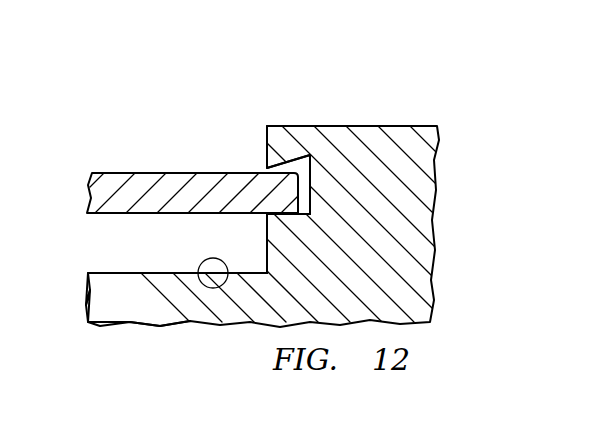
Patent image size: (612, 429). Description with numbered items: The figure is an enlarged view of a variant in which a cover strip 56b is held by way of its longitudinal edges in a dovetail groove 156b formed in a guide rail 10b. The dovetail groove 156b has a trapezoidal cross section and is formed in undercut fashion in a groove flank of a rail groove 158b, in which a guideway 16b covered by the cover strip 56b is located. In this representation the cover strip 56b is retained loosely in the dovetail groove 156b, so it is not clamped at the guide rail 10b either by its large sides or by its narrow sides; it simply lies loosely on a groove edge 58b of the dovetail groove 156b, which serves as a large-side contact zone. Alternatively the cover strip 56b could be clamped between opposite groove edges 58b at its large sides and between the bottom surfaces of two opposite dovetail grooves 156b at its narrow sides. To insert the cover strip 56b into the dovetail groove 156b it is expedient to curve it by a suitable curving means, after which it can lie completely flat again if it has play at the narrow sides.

The guide rail 10b is at (365, 125).
The guideway 16b is at (127, 273).
The cover strip 56b is at (177, 173).
The groove edge 58b is at (265, 228).
The dovetail groove 156b is at (300, 165).
The rail groove 158b is at (224, 287).